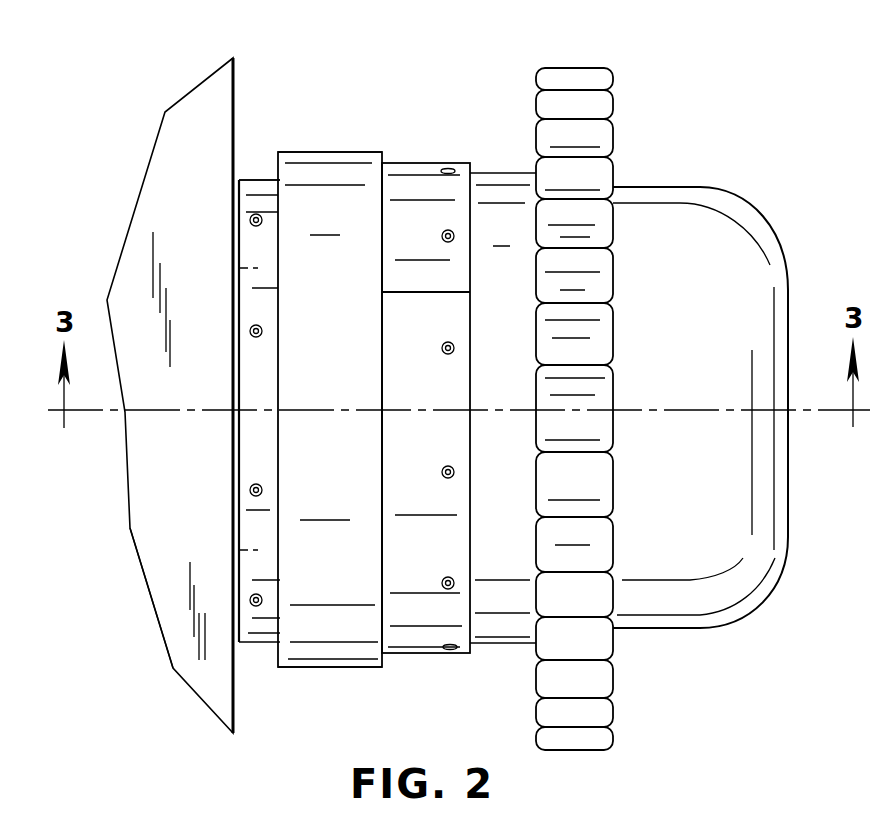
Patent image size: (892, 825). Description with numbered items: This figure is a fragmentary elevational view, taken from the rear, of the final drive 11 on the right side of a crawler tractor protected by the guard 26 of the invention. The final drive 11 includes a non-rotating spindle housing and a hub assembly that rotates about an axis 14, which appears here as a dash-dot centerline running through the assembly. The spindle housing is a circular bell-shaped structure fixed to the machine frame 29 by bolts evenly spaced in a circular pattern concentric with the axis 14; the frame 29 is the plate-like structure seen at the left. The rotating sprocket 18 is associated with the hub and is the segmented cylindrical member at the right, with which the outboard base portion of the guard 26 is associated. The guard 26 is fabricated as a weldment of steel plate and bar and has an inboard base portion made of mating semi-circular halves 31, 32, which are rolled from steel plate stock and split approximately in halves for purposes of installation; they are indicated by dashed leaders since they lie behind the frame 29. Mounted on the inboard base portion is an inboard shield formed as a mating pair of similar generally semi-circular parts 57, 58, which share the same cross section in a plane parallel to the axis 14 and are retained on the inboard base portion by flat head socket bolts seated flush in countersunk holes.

The final drive 11 is at (387, 83).
The axis 14 is at (108, 413).
The sprocket 18 is at (602, 98).
The guard 26 is at (347, 134).
The machine frame 29 is at (166, 537).
The semi-circular half 31 is at (257, 270).
The semi-circular half 32 is at (257, 548).
The semi-circular shield part 57 is at (312, 152).
The semi-circular shield part 58 is at (330, 667).